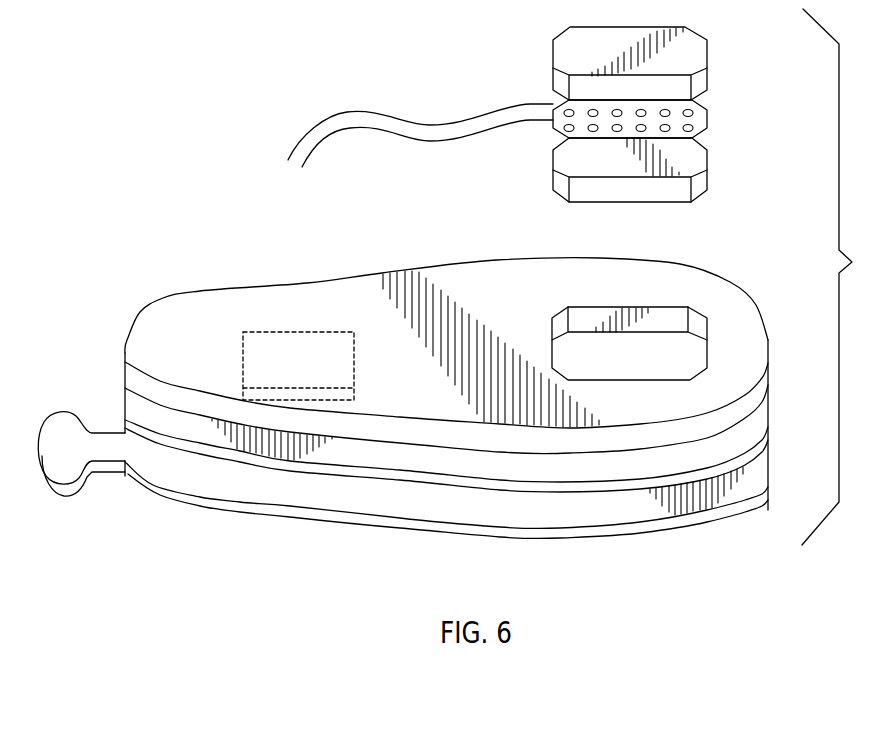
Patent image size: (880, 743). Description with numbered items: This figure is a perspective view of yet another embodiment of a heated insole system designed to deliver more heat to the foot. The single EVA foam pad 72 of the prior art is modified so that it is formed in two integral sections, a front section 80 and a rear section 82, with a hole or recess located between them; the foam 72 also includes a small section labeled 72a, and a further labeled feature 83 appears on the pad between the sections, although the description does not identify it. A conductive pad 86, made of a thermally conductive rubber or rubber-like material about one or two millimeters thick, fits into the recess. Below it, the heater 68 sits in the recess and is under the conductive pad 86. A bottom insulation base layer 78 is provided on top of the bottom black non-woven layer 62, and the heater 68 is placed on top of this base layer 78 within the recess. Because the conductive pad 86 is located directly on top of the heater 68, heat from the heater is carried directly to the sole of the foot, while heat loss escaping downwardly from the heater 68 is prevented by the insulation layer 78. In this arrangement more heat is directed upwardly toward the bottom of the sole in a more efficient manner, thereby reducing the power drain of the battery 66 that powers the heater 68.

The bottom black non-woven layer 62 is at (620, 512).
The battery 66 is at (345, 380).
The heater 68 is at (696, 117).
The EVA foam pad 72 is at (412, 432).
The small section of foam 72a is at (633, 192).
The insulation layer 78 is at (762, 440).
The front section 80 is at (745, 360).
The rear section 82 is at (315, 315).
The recess 83 is at (630, 366).
The conductive pad 86 is at (696, 52).